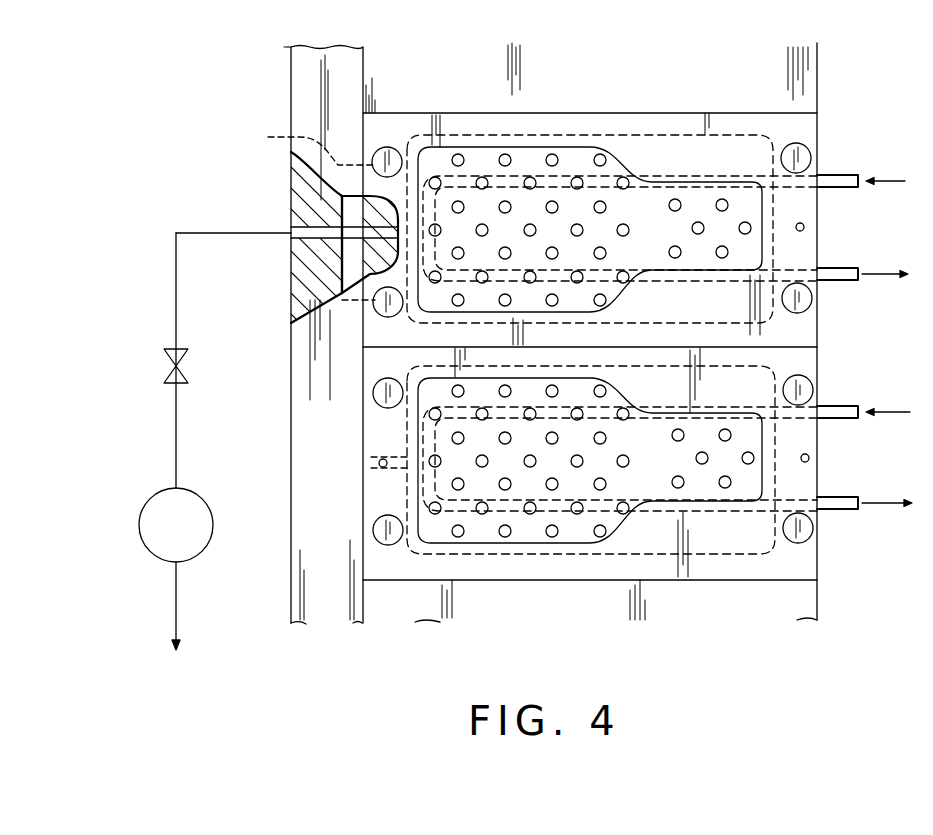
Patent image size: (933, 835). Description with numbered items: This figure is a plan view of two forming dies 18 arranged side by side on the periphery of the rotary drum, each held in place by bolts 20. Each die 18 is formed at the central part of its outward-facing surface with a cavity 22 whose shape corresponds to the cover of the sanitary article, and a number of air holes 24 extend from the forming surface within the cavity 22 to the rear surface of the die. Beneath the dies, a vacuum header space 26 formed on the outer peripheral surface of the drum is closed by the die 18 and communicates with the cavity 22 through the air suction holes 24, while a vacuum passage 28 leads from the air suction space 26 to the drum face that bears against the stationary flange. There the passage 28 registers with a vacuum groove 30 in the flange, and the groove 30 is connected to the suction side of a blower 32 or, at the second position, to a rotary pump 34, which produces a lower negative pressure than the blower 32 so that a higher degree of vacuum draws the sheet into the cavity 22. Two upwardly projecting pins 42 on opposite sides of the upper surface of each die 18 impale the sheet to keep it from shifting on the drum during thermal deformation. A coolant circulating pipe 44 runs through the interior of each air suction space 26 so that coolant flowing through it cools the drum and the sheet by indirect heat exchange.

The forming die 18 is at (703, 113).
The bolt 20 is at (795, 158).
The cavity 22 is at (520, 157).
The air hole 24 is at (597, 156).
The vacuum header space 26 is at (650, 140).
The vacuum passage 28 is at (382, 227).
The vacuum groove 30 is at (291, 228).
The blower 32 is at (145, 546).
The rotary pump 34 is at (176, 366).
The pin 42 is at (805, 227).
The coolant circulating pipe 44 is at (840, 498).